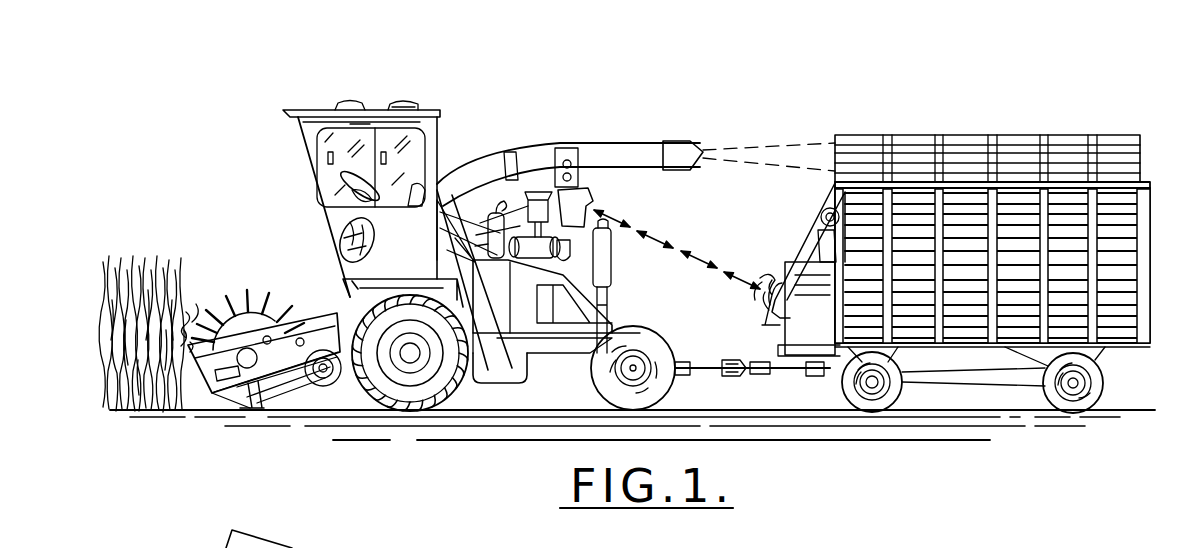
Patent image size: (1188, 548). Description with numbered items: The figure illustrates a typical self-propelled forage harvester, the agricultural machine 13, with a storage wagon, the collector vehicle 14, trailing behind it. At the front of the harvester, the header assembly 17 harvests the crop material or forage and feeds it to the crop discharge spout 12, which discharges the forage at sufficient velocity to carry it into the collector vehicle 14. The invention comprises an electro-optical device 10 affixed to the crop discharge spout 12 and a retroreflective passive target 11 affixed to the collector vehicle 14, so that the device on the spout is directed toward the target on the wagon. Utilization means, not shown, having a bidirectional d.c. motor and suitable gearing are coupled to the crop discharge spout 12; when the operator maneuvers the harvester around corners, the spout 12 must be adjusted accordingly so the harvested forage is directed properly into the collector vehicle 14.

The electro-optical device 10 is at (598, 197).
The retroreflective target 11 is at (772, 332).
The crop discharge spout 12 is at (612, 143).
The agricultural machine 13 is at (306, 110).
The collector vehicle 14 is at (1064, 135).
The header assembly 17 is at (303, 312).